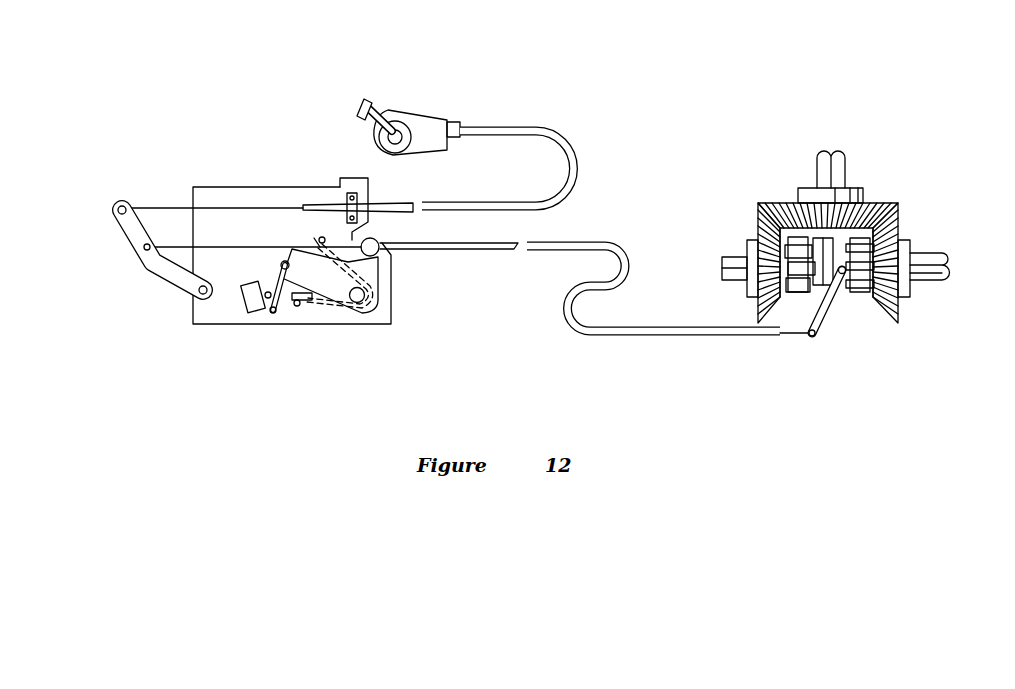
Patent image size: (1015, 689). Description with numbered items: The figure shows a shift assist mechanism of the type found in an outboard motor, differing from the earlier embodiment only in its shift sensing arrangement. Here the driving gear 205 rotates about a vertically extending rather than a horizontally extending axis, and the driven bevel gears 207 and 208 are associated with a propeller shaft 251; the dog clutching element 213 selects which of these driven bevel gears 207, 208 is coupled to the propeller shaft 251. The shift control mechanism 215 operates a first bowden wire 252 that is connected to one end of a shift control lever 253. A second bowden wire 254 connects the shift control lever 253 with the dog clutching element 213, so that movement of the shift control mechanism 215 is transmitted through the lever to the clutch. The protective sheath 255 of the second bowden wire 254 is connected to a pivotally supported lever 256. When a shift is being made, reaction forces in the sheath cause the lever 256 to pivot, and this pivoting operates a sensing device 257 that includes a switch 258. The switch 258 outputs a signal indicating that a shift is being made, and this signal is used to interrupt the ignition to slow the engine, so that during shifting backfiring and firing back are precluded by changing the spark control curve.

The driving gear 205 is at (893, 203).
The driven bevel gear 207 is at (758, 215).
The driven bevel gear 208 is at (885, 313).
The dog clutching element 213 is at (858, 287).
The shift control mechanism 215 is at (420, 97).
The propeller shaft 251 is at (927, 280).
The first bowden wire 252 is at (245, 207).
The shift control lever 253 is at (148, 272).
The second bowden wire 254 is at (260, 247).
The protective sheath 255 is at (435, 253).
The pivotally supported lever 256 is at (372, 268).
The sensing device 257 is at (327, 312).
The switch 258 is at (247, 322).